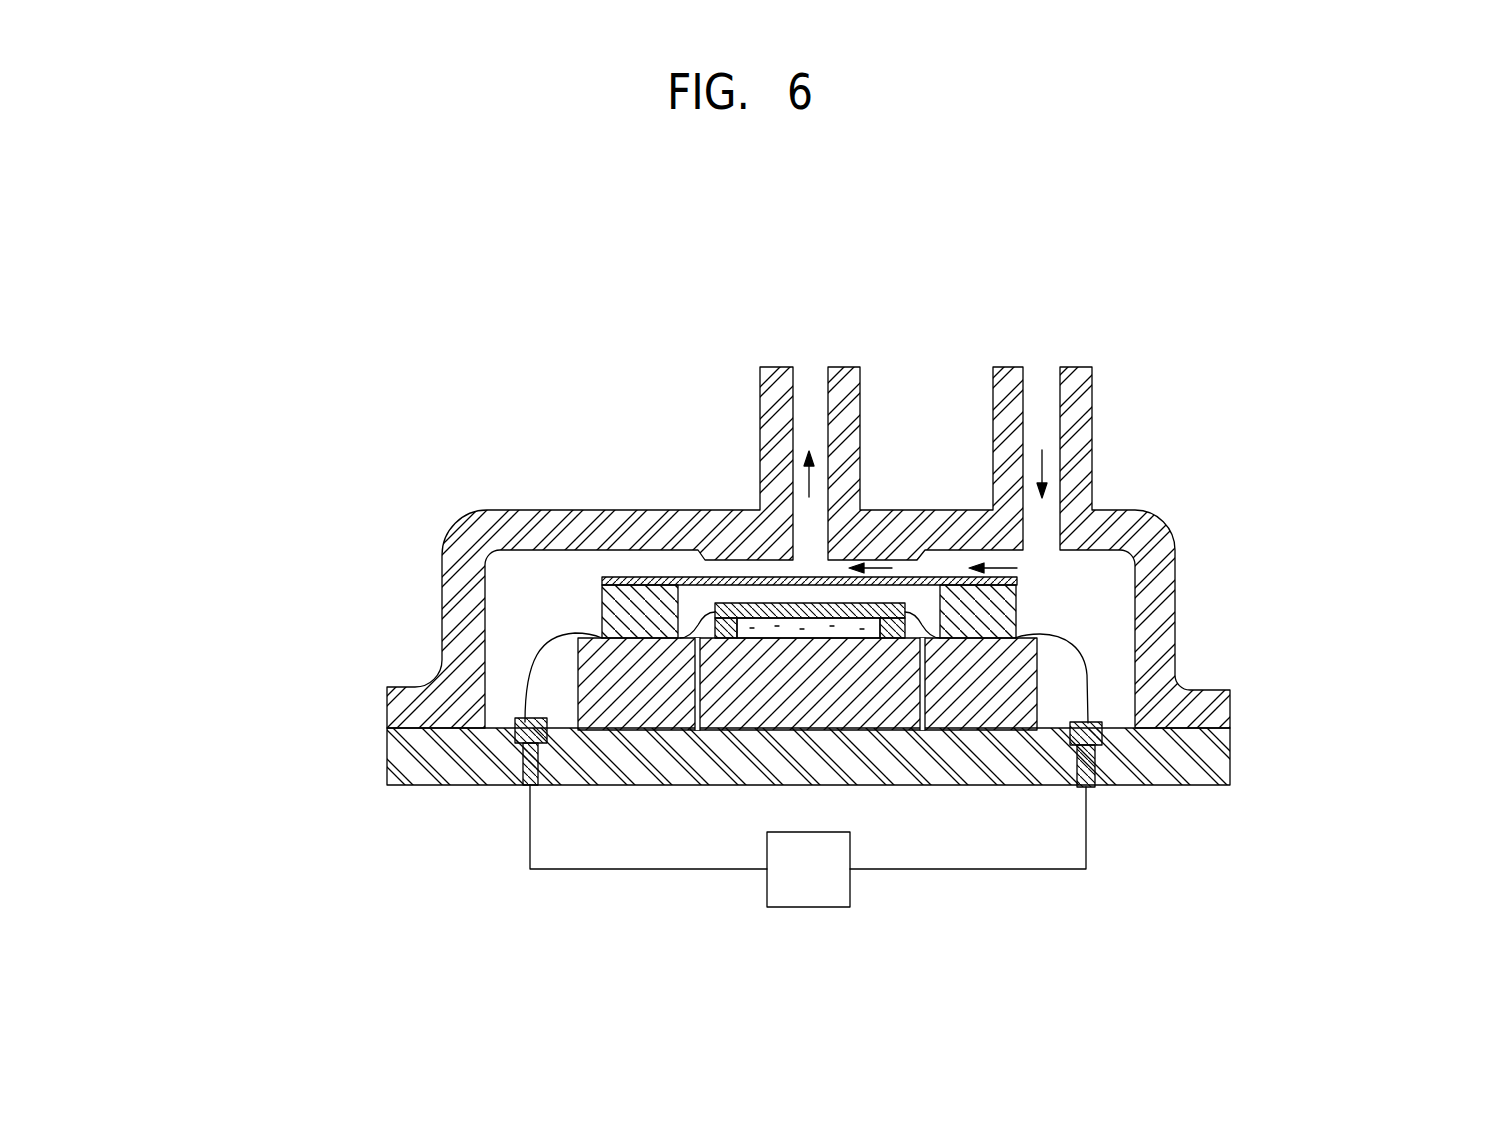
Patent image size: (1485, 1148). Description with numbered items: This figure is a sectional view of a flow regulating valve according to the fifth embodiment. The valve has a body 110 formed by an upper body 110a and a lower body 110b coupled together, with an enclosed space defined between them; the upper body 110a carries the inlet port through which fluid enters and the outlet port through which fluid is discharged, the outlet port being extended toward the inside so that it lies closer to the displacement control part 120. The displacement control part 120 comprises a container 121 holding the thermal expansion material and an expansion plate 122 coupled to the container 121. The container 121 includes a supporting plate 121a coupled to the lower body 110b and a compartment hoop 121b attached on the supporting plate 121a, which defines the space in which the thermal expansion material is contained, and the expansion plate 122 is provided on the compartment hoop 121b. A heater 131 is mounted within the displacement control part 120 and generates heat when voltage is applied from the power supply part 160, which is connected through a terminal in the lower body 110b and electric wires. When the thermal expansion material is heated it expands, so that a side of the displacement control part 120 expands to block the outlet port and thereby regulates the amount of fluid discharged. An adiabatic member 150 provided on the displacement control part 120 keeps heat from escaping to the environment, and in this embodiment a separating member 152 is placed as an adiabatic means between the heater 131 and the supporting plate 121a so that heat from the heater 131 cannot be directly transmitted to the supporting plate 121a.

The body 110 is at (268, 731).
The upper body 110a is at (397, 713).
The lower body 110b is at (397, 762).
The displacement control part 120 is at (1385, 615).
The container 121 is at (1272, 640).
The supporting plate 121a is at (1010, 668).
The compartment hoop 121b is at (1010, 625).
The expansion plate 122 is at (1017, 581).
The heater 131 is at (731, 628).
The adiabatic member 150 is at (925, 418).
The separating member 152 is at (897, 625).
The power supply part 160 is at (767, 894).